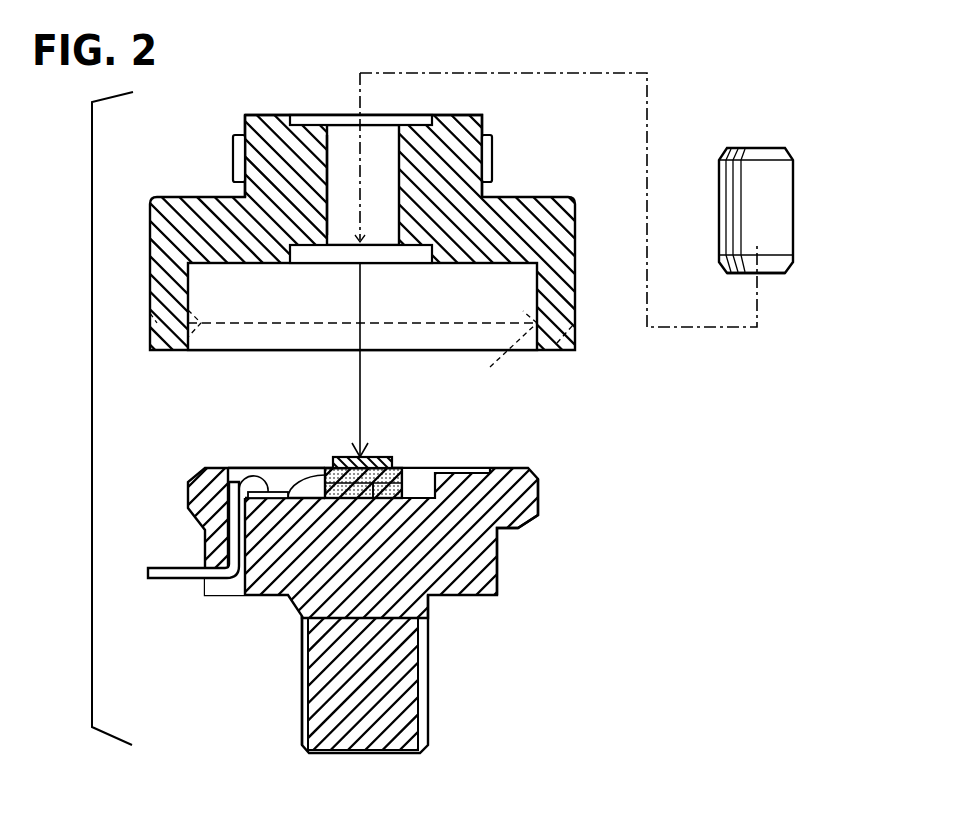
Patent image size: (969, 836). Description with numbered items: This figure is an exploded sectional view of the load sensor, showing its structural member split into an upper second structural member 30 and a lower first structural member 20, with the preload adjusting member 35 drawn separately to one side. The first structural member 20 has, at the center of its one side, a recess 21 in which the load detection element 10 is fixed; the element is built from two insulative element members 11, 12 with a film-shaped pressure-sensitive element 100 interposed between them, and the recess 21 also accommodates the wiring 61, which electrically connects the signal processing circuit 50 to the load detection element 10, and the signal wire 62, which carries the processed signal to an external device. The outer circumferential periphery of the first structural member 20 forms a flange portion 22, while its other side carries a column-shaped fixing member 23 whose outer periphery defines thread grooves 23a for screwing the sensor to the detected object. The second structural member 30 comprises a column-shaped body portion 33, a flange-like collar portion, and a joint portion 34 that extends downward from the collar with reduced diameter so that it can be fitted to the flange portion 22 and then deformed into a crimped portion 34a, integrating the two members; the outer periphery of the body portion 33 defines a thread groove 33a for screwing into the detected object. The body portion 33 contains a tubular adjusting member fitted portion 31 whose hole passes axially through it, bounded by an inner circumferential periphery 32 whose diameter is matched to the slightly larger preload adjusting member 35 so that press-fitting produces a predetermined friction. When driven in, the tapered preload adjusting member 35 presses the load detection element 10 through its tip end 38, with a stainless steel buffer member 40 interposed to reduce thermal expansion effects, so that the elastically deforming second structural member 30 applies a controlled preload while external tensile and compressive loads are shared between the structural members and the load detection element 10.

The load detection element 10 is at (349, 461).
The element member 11 is at (388, 456).
The element member 12 is at (405, 468).
The first structural member 20 is at (263, 602).
The recess 21 is at (438, 468).
The flange portion 22 is at (522, 533).
The fixing member 23 is at (388, 665).
The thread grooves 23a is at (300, 680).
The second structural member 30 is at (570, 196).
The adjusting member fitted portion 31 is at (358, 210).
The inner circumferential periphery 32 is at (328, 159).
The body portion 33 is at (481, 121).
The thread groove 33a is at (493, 153).
The joint portion 34 is at (535, 322).
The crimped portion 34a is at (507, 358).
The preload adjusting member 35 is at (817, 171).
The tip end 38 is at (775, 274).
The buffer member 40 is at (374, 450).
The signal processing circuit 50 is at (270, 492).
The wiring 61 is at (303, 475).
The signal wire 62 is at (172, 578).
The pressure-sensitive element 100 is at (375, 498).